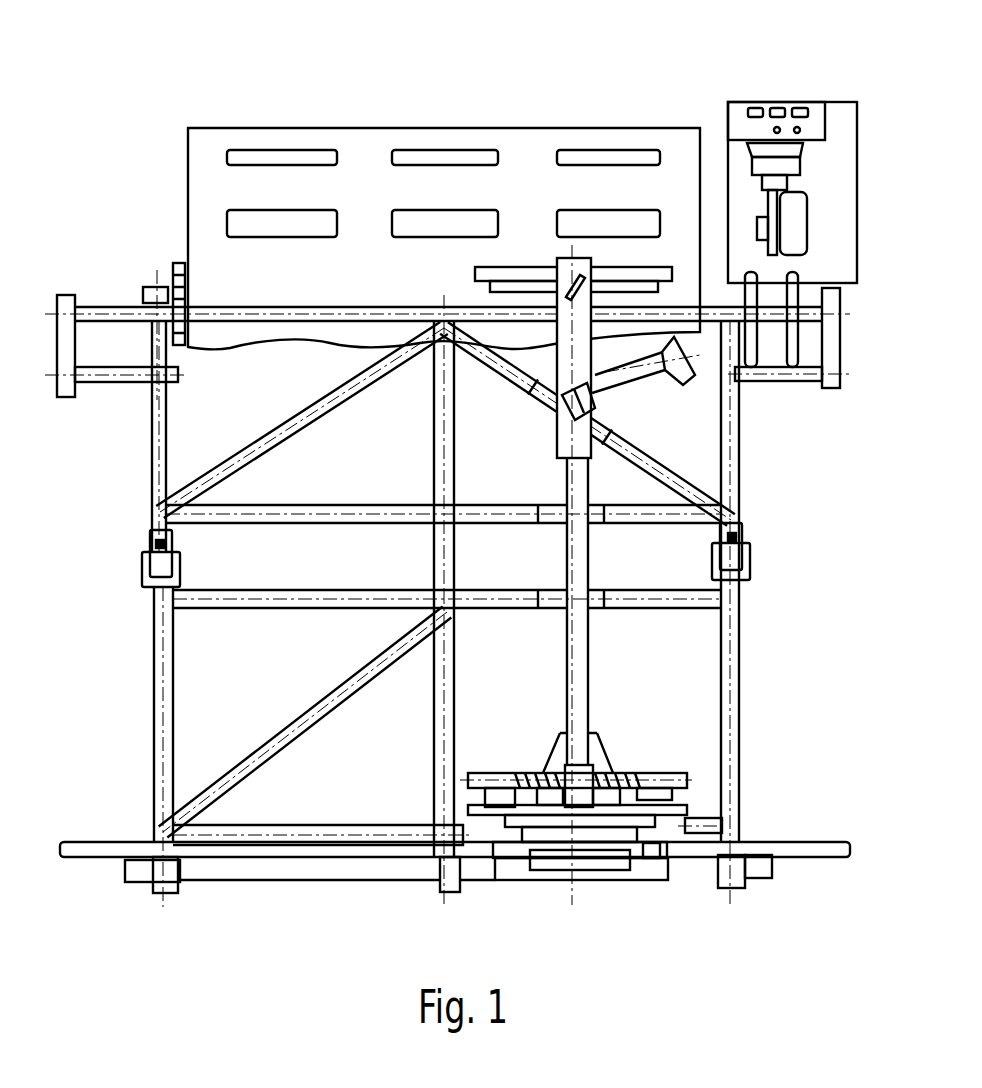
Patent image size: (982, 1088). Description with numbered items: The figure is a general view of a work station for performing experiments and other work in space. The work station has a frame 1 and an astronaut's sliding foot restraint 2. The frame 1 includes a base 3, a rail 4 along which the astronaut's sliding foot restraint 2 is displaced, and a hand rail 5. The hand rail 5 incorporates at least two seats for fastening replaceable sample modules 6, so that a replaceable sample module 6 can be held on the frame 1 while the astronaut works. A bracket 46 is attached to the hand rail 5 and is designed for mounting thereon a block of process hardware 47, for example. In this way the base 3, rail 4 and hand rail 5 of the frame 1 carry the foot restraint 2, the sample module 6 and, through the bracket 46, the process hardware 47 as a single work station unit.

The frame 1 is at (395, 442).
The astronaut's sliding foot restraint 2 is at (661, 575).
The base 3 is at (400, 747).
The rail 4 is at (427, 875).
The hand rail 5 is at (445, 231).
The replaceable sample module 6 is at (444, 175).
The bracket 46 is at (785, 399).
The block of process hardware 47 is at (814, 241).